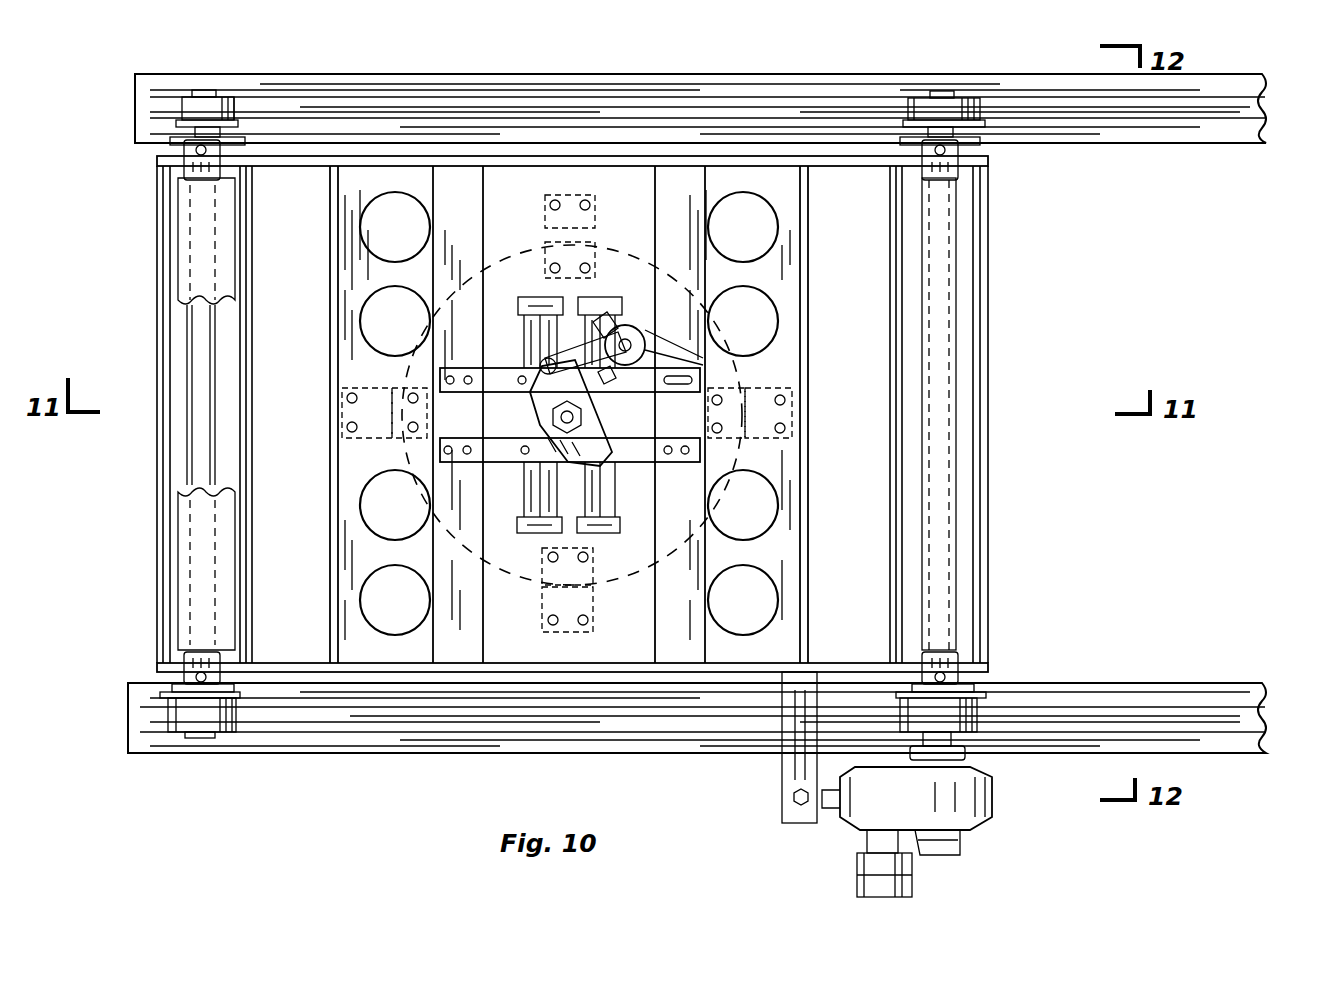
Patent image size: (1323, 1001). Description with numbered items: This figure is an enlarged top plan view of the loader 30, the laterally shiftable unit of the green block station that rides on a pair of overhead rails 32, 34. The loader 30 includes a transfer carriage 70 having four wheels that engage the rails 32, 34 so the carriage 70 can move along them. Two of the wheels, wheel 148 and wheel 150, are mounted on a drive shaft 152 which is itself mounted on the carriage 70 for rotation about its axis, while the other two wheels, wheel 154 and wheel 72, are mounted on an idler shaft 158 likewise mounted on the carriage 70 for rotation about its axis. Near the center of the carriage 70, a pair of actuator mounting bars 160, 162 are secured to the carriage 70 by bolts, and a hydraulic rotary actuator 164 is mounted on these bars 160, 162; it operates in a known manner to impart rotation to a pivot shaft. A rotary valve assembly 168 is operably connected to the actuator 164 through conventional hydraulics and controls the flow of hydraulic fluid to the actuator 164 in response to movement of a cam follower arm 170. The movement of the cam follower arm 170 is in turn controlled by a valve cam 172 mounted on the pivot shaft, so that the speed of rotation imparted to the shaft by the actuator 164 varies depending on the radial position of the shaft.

The loader 30 is at (1000, 418).
The overhead rail 32 is at (1264, 74).
The overhead rail 34 is at (1146, 698).
The transfer carriage 70 is at (1010, 295).
The wheel 72 is at (212, 720).
The wheel 148 is at (985, 118).
The wheel 150 is at (955, 712).
The drive shaft 152 is at (994, 382).
The wheel 154 is at (140, 118).
The idler shaft 158 is at (178, 400).
The actuator mounting bar 160 is at (503, 380).
The actuator mounting bar 162 is at (500, 455).
The hydraulic rotary actuator 164 is at (605, 505).
The rotary valve assembly 168 is at (640, 350).
The cam follower arm 170 is at (585, 335).
The valve cam 172 is at (505, 412).